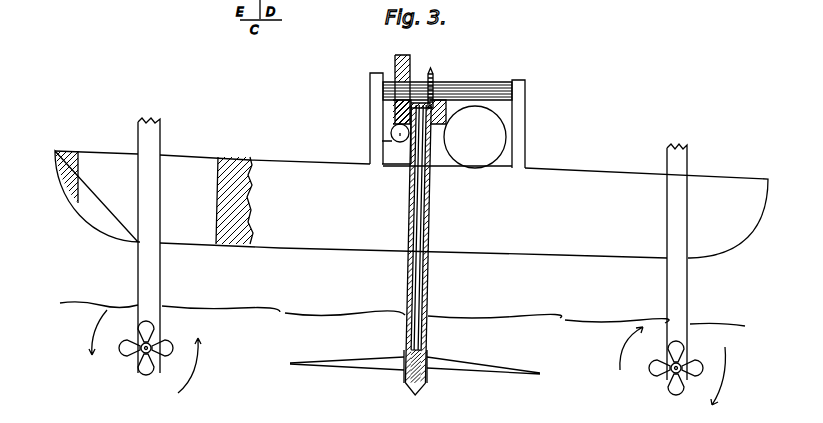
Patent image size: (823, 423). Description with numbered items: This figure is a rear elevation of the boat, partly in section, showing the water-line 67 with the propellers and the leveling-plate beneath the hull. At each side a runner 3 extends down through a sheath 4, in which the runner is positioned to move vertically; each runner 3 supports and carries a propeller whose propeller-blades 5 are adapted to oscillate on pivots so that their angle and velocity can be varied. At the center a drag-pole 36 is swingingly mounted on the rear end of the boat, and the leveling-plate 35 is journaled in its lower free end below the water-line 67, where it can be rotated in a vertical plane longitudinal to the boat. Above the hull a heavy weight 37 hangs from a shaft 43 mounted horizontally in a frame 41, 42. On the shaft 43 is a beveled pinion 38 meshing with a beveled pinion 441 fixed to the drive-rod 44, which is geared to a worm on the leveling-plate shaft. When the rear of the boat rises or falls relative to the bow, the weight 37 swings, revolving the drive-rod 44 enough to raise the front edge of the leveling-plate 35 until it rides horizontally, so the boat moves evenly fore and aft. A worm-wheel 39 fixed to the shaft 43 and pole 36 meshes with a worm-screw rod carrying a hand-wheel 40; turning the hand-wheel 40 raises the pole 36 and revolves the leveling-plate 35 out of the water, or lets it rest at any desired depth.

The runners 3 is at (162, 133).
The sheaths 4 is at (162, 181).
The propeller-blades 5 is at (156, 320).
The leveling-plate 35 is at (326, 362).
The drag-pole 36 is at (407, 285).
The weight 37 is at (475, 137).
The beveled pinion 38 is at (433, 73).
The worm-wheel 39 is at (411, 60).
The hand-wheel 40 is at (405, 154).
The frame 41 is at (386, 129).
The frame 42 is at (517, 101).
The shaft 43 is at (492, 84).
The drive-rod 44 is at (421, 190).
The beveled pinion 441 is at (438, 81).
The water-line 67 is at (396, 315).